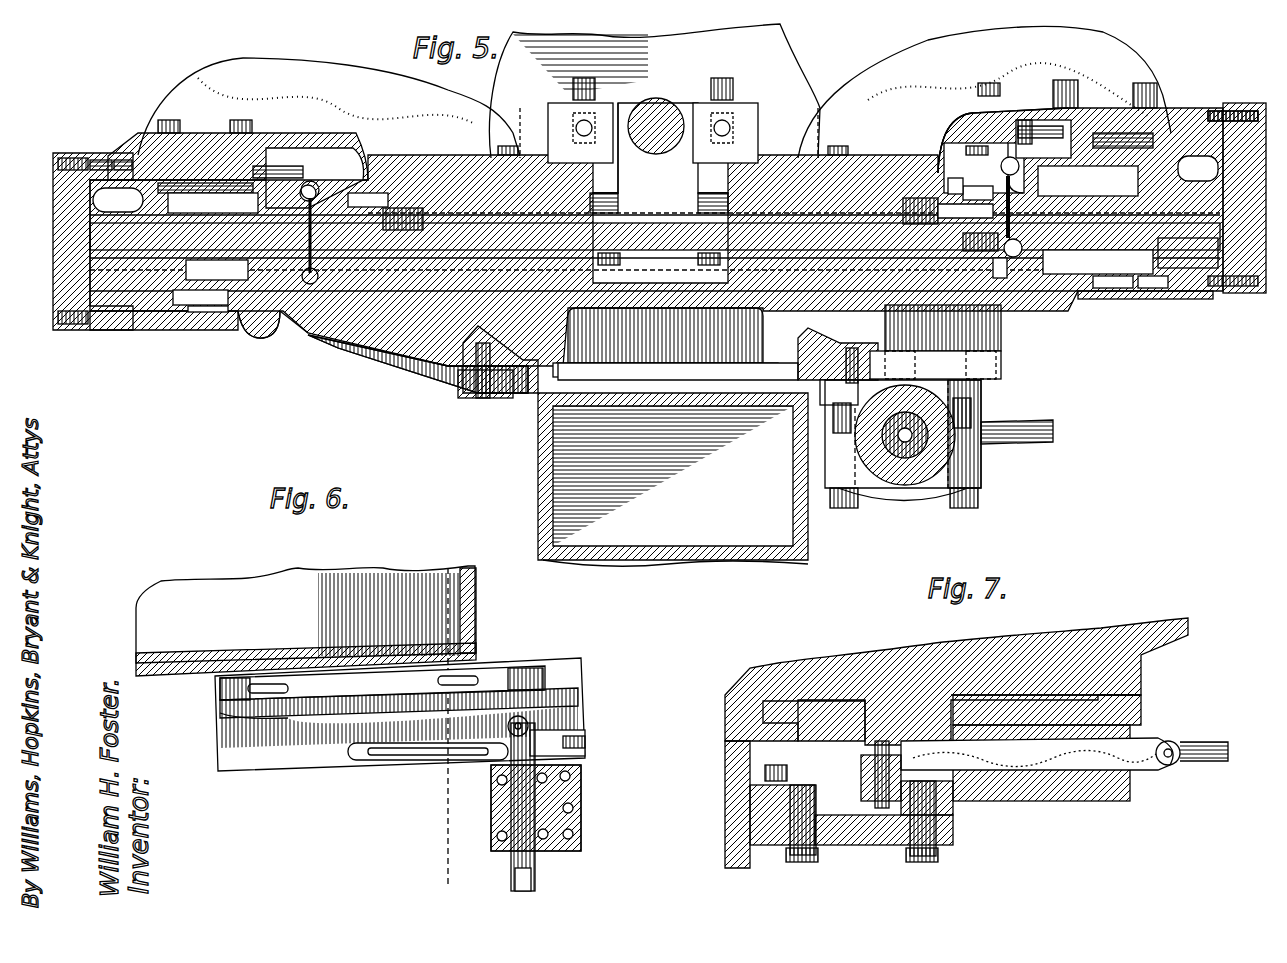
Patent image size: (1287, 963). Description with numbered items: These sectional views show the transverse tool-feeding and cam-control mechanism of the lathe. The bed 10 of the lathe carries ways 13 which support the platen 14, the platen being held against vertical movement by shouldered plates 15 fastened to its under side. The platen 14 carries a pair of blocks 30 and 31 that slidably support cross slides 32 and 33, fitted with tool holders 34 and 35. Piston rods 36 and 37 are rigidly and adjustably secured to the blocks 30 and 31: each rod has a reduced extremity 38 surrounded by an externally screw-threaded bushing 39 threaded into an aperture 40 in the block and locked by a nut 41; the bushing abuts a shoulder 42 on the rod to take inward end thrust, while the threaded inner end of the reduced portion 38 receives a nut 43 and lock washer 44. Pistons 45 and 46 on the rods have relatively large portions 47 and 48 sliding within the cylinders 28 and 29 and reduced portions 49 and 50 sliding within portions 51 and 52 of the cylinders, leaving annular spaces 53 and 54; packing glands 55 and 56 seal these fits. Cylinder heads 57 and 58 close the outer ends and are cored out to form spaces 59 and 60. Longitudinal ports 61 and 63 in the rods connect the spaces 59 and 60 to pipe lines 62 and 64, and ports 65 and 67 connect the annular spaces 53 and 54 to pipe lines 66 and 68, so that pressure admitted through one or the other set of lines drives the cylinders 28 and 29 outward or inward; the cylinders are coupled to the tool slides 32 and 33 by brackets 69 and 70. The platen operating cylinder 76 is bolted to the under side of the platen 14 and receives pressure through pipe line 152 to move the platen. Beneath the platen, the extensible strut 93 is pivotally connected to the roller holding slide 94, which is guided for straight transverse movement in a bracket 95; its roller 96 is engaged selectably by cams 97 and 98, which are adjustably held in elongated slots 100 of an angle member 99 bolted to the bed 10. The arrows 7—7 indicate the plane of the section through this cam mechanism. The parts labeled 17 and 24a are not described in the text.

In FIG. 6, the section plane arrows 7 is at (515, 878).
In FIG. 5, the bed 10 is at (530, 430).
In FIG. 6, the bed 10 is at (462, 612).
In FIG. 7, the bed 10 is at (717, 728).
In FIG. 5, the ways 13 is at (515, 395).
In FIG. 5, the platen 14 is at (430, 380).
In FIG. 7, the platen 14 is at (1035, 640).
In FIG. 5, the shouldered plates 15 is at (488, 392).
In FIG. 7, the shouldered plates 15 is at (800, 720).
In FIG. 5, the housing 17 is at (778, 45).
In FIG. 5, the shaft 24a is at (655, 112).
In FIG. 5, the cylinder 28 is at (1170, 283).
In FIG. 5, the cylinder 29 is at (245, 330).
In FIG. 5, the block 30 is at (712, 308).
In FIG. 5, the block 31 is at (585, 306).
In FIG. 5, the cross slide 32 is at (700, 195).
In FIG. 5, the cross slide 33 is at (612, 195).
In FIG. 5, the tool holder 34 is at (745, 110).
In FIG. 5, the tool holder 35 is at (600, 108).
In FIG. 5, the piston rod 36 is at (1135, 272).
In FIG. 5, the piston rod 37 is at (155, 292).
In FIG. 5, the reduced extremity 38 is at (930, 130).
In FIG. 5, the externally screw-threaded bushing 39 is at (955, 185).
In FIG. 5, the screw-threaded aperture 40 is at (890, 212).
In FIG. 5, the nut 41 is at (945, 172).
In FIG. 5, the shoulder 42 is at (992, 158).
In FIG. 5, the nut 43 is at (910, 222).
In FIG. 5, the lock washer 44 is at (935, 228).
In FIG. 5, the piston 45 is at (1222, 103).
In FIG. 5, the piston 46 is at (116, 150).
In FIG. 5, the relatively large portion 47 is at (1172, 140).
In FIG. 5, the relatively large portion 48 is at (96, 150).
In FIG. 5, the reduced portion 49 is at (1132, 76).
In FIG. 5, the reduced portion 50 is at (198, 175).
In FIG. 5, the cylinder portion 51 is at (1100, 125).
In FIG. 5, the cylinder portion 52 is at (275, 330).
In FIG. 5, the annular space 53 is at (1115, 262).
In FIG. 5, the annular space 54 is at (190, 322).
In FIG. 5, the packing gland 55 is at (1022, 118).
In FIG. 5, the packing gland 56 is at (290, 165).
In FIG. 5, the cylinder head 57 is at (1238, 290).
In FIG. 5, the cylinder head 58 is at (50, 272).
In FIG. 5, the space 59 is at (1200, 270).
In FIG. 5, the space 60 is at (60, 218).
In FIG. 5, the longitudinal port 61 is at (1160, 285).
In FIG. 5, the pipe line 62 is at (985, 305).
In FIG. 5, the longitudinal port 63 is at (195, 285).
In FIG. 5, the pipe line 64 is at (305, 330).
In FIG. 5, the port 65 is at (1165, 160).
In FIG. 5, the pipe line 66 is at (1000, 135).
In FIG. 5, the port 67 is at (245, 160).
In FIG. 5, the pipe line 68 is at (321, 229).
In FIG. 5, the bracket 69 is at (945, 108).
In FIG. 5, the bracket 70 is at (325, 140).
In FIG. 5, the platen operating cylinder 76 is at (900, 480).
In FIG. 6, the extensible strut 93 is at (527, 876).
In FIG. 7, the extensible strut 93 is at (1200, 728).
In FIG. 6, the roller holding member or slide 94 is at (483, 788).
In FIG. 7, the roller holding member or slide 94 is at (1130, 745).
In FIG. 6, the bracket 95 is at (483, 816).
In FIG. 7, the bracket 95 is at (1088, 795).
In FIG. 6, the roller 96 is at (500, 716).
In FIG. 7, the roller 96 is at (852, 782).
In FIG. 6, the cam 97 is at (282, 708).
In FIG. 7, the cam 97 is at (765, 840).
In FIG. 6, the cam 98 is at (560, 722).
In FIG. 7, the cam 98 is at (940, 800).
In FIG. 6, the angle member 99 is at (578, 680).
In FIG. 7, the angle member 99 is at (835, 842).
In FIG. 6, the elongated slots 100 is at (485, 662).
In FIG. 7, the elongated slots 100 is at (815, 800).
In FIG. 5, the pipe line 152 is at (1010, 430).